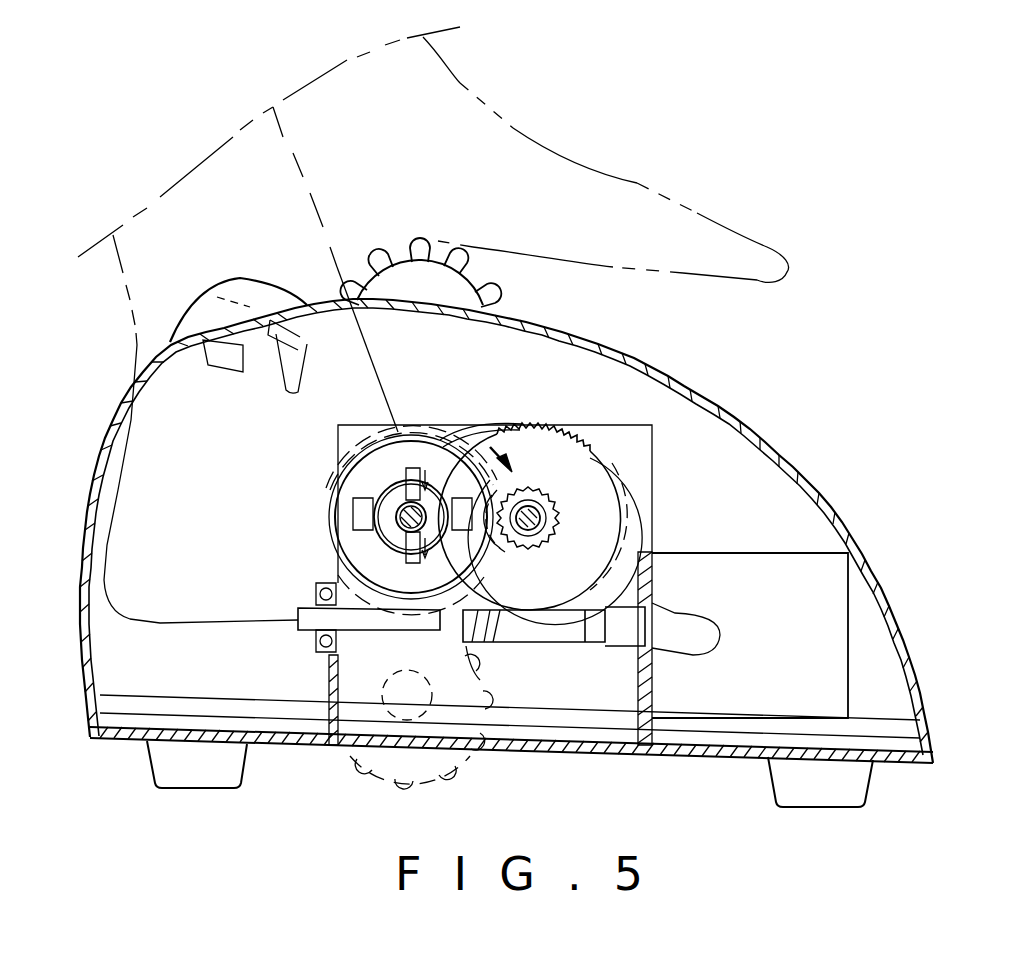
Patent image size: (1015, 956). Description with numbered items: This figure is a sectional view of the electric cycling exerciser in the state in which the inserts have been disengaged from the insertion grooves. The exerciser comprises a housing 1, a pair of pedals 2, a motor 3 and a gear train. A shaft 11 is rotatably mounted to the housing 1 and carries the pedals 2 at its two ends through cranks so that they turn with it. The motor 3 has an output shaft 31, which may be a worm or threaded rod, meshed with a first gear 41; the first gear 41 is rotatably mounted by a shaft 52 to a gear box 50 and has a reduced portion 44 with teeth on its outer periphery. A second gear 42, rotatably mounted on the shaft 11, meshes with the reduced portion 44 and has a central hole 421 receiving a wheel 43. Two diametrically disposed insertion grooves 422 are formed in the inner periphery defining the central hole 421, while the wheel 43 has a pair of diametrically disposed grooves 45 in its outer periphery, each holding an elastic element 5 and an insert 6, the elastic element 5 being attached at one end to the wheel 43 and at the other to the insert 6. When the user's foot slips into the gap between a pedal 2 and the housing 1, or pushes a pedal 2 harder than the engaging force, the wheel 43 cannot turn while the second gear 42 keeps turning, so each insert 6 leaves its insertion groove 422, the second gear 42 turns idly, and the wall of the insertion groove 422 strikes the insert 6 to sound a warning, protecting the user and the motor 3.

The housing 1 is at (815, 478).
The pedal 2 is at (476, 284).
The motor 3 is at (785, 610).
The elastic element 5 is at (412, 548).
The insert 6 is at (480, 600).
The shaft 11 is at (405, 545).
The output shaft 31 is at (500, 640).
The first gear 41 is at (597, 453).
The second gear 42 is at (470, 530).
The wheel 43 is at (392, 532).
The reduced portion 44 is at (548, 516).
The groove 45 is at (404, 485).
The gear box 50 is at (588, 592).
The shaft 52 is at (532, 540).
The central hole 421 is at (397, 535).
The insertion groove 422 is at (392, 530).